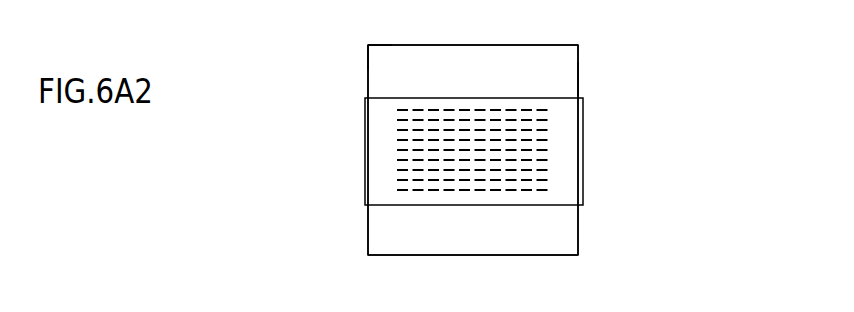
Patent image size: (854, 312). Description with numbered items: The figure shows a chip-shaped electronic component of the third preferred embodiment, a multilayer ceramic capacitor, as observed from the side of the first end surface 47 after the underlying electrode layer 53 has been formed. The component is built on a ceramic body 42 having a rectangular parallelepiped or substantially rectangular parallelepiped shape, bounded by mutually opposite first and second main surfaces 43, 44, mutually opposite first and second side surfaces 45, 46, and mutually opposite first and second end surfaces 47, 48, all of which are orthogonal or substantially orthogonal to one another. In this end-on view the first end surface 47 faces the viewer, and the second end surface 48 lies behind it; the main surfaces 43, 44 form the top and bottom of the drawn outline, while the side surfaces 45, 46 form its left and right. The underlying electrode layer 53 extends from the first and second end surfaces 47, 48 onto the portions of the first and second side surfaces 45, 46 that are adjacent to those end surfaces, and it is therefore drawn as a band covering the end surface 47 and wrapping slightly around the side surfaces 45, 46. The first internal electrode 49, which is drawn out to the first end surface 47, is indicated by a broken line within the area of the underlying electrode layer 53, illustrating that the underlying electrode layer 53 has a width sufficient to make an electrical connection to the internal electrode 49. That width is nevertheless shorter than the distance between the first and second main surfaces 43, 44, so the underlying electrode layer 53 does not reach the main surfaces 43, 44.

The ceramic body 42 is at (583, 60).
The first main surface 43 is at (477, 45).
The second main surface 44 is at (443, 255).
The first side surface 45 is at (369, 222).
The second side surface 46 is at (578, 228).
The first end surface 47 is at (565, 82).
The second end surface 48 is at (382, 57).
The first internal electrode 49 is at (495, 183).
The underlying electrode layer 53 is at (572, 145).